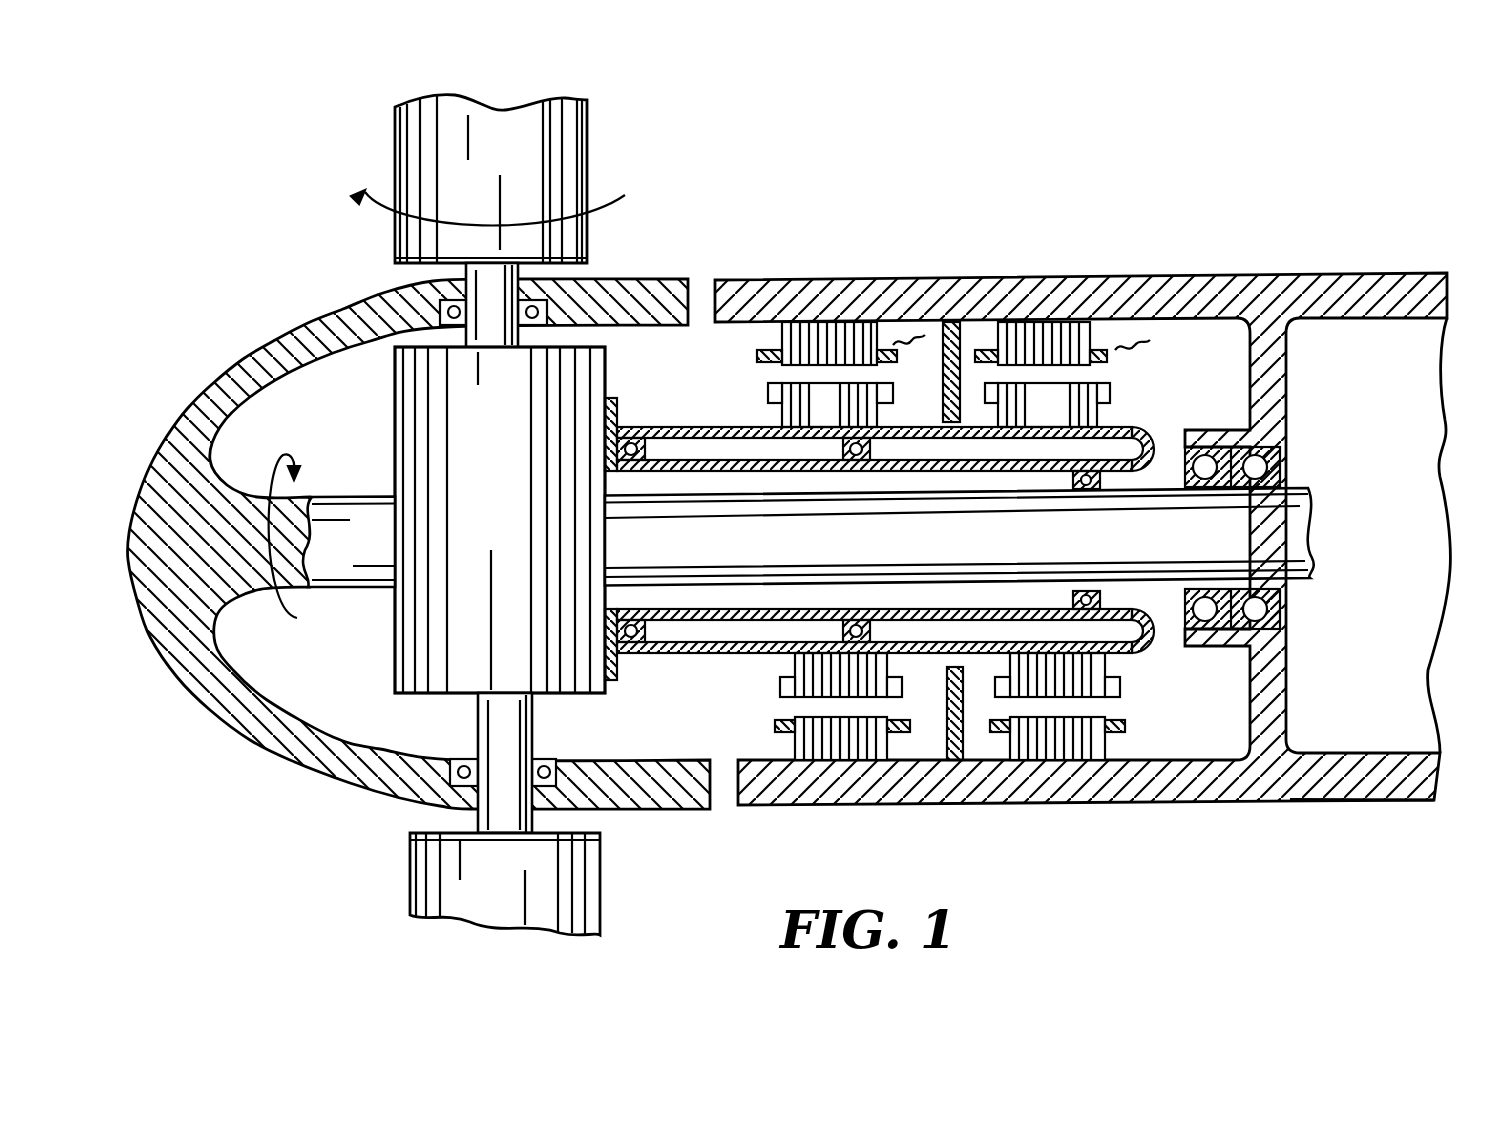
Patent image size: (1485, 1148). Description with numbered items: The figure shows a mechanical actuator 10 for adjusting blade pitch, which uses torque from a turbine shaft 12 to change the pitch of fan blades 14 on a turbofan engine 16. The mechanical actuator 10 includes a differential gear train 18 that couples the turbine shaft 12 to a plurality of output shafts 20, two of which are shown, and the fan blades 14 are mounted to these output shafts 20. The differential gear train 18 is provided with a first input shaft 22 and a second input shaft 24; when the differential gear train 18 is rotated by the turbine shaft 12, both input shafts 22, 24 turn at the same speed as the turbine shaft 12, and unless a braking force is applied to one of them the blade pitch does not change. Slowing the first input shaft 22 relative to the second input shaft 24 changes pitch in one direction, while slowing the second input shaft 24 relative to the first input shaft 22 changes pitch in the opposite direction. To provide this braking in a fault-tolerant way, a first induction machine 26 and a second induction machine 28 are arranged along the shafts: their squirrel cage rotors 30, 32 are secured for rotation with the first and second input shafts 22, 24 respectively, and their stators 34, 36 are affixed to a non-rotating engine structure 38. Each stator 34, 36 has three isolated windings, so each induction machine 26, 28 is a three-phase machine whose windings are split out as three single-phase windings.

The mechanical actuator 10 is at (372, 391).
The turbine shaft 12 is at (1322, 515).
The fan blades 14 is at (585, 160).
The turbofan engine 16 is at (1252, 251).
The differential gear train 18 is at (516, 502).
The output shafts 20 is at (527, 718).
The first input shaft 22 is at (1158, 640).
The second input shaft 24 is at (677, 656).
The first induction machine 26 is at (1104, 337).
The second induction machine 28 is at (887, 333).
The squirrel cage rotor 30 is at (1110, 394).
The squirrel cage rotor 32 is at (878, 413).
The stator 34 is at (1112, 742).
The stator 36 is at (888, 737).
The non-rotating engine structure 38 is at (1314, 799).